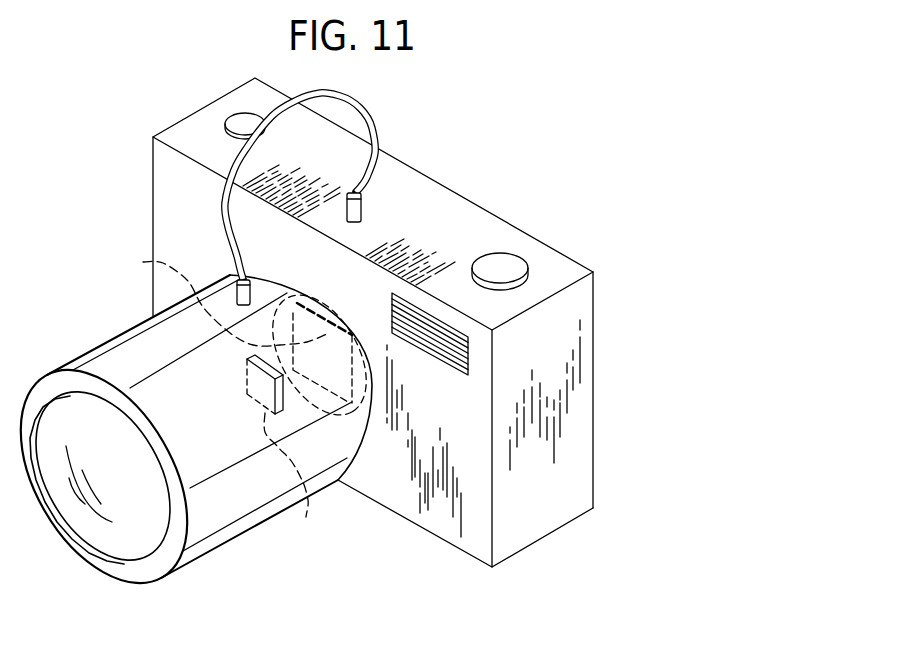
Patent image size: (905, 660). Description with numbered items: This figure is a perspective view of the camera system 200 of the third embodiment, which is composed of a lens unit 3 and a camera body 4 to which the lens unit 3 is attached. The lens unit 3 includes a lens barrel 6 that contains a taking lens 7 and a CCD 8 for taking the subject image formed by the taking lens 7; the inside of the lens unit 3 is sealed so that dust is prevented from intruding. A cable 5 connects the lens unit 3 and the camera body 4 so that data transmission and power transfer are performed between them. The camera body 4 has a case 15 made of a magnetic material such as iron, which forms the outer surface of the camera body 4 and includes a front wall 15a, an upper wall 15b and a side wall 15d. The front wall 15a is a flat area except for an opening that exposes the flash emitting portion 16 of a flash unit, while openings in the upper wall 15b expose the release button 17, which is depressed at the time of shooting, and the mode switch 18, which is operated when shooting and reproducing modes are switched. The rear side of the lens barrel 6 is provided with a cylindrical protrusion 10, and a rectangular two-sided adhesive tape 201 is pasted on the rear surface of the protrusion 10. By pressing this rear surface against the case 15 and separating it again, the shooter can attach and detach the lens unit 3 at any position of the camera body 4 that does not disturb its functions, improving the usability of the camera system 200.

The camera system 200 is at (416, 358).
The case 15 is at (416, 331).
The front wall 15a is at (397, 487).
The upper wall 15b is at (447, 205).
The side wall 15d is at (580, 457).
The flash emitting portion 16 is at (429, 345).
The release button 17 is at (237, 119).
The mode switch 18 is at (512, 260).
The camera body 4 is at (600, 530).
The lens unit 3 is at (186, 449).
The lens barrel 6 is at (190, 542).
The taking lens 7 is at (130, 533).
The CCD 8 is at (279, 450).
The cylindrical protrusion 10 is at (310, 295).
The two-sided adhesive tape 201 is at (143, 262).
The cable 5 is at (338, 98).